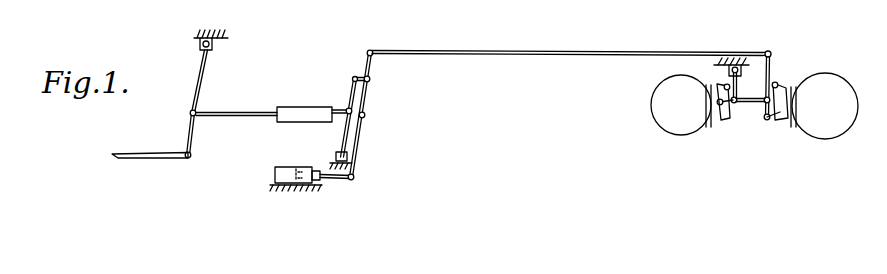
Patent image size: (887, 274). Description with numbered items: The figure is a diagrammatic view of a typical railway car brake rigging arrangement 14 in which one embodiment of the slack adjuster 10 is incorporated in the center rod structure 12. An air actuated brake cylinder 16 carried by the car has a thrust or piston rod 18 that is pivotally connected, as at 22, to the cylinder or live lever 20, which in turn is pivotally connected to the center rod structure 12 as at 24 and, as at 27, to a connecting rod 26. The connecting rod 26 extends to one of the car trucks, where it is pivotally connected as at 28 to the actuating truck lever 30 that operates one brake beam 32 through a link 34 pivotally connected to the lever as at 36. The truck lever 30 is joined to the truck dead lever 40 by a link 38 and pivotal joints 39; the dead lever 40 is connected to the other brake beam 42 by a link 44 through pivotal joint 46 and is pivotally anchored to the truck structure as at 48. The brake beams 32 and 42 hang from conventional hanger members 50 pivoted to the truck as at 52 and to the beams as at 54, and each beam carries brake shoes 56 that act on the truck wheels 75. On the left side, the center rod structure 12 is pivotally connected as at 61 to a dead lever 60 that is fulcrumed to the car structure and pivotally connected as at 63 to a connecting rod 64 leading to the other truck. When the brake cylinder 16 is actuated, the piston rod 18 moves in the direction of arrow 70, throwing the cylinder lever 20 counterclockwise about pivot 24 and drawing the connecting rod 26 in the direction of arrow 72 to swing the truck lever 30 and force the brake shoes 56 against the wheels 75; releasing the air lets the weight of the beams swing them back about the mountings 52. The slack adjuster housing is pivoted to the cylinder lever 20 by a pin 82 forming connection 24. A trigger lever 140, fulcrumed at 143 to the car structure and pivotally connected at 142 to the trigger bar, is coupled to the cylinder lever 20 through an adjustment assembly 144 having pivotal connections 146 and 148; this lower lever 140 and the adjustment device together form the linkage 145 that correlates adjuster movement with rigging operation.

The slack adjuster 10 is at (286, 106).
The center rod structure 12 is at (247, 121).
The brake rigging arrangement 14 is at (601, 46).
The brake cylinder 16 is at (272, 177).
The thrust or piston rod 18 is at (330, 170).
The cylinder or live lever 20 is at (364, 132).
The pivotal connection 22 is at (354, 177).
The pivotal connection 24 is at (364, 115).
The connecting rod 26 is at (470, 51).
The pivotal connection 27 is at (373, 50).
The pivotal connection 28 is at (768, 50).
The actuating truck lever 30 is at (772, 60).
The brake beam 32 is at (785, 121).
The link 34 is at (772, 121).
The pivotal connection 36 is at (765, 119).
The link 38 is at (750, 103).
The pivotal joints 39 is at (727, 178).
The truck dead lever 40 is at (742, 68).
The brake beam 42 is at (714, 118).
The link 44 is at (724, 115).
The pivotal joint 46 is at (732, 106).
The pivotal anchor 48 is at (718, 62).
The hanger members 50 is at (826, 70).
The pivotal mounting 52 is at (725, 85).
The pivotal connection 54 is at (712, 100).
The brake shoes 56 is at (666, 126).
The dead lever 60 is at (208, 83).
The pivotal connection 61 is at (190, 114).
The pivotal connection 63 is at (191, 158).
The connecting rod 64 is at (141, 160).
The arrow 70 is at (373, 196).
The arrow 72 is at (527, 60).
The truck wheels 75 is at (663, 113).
The pin 82 is at (208, 34).
The trigger lever 140 is at (343, 133).
The pivotal connection 142 is at (347, 108).
The fulcrum 143 is at (348, 155).
The adjustment assembly 144 is at (362, 66).
The linkage 145 is at (353, 72).
The pivotal connection 146 is at (352, 80).
The pivotal connection 148 is at (369, 80).